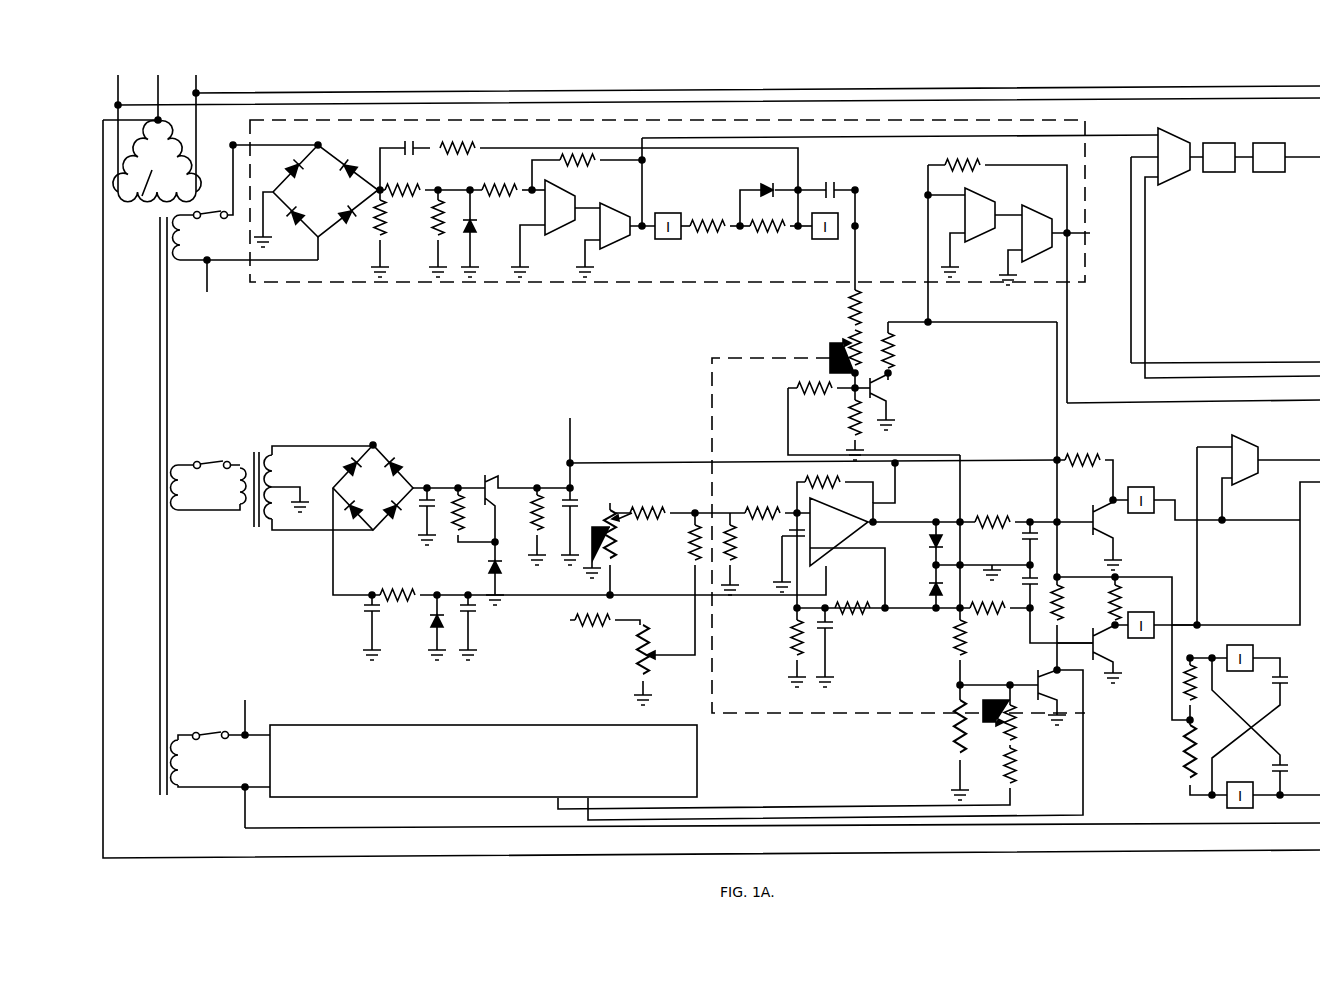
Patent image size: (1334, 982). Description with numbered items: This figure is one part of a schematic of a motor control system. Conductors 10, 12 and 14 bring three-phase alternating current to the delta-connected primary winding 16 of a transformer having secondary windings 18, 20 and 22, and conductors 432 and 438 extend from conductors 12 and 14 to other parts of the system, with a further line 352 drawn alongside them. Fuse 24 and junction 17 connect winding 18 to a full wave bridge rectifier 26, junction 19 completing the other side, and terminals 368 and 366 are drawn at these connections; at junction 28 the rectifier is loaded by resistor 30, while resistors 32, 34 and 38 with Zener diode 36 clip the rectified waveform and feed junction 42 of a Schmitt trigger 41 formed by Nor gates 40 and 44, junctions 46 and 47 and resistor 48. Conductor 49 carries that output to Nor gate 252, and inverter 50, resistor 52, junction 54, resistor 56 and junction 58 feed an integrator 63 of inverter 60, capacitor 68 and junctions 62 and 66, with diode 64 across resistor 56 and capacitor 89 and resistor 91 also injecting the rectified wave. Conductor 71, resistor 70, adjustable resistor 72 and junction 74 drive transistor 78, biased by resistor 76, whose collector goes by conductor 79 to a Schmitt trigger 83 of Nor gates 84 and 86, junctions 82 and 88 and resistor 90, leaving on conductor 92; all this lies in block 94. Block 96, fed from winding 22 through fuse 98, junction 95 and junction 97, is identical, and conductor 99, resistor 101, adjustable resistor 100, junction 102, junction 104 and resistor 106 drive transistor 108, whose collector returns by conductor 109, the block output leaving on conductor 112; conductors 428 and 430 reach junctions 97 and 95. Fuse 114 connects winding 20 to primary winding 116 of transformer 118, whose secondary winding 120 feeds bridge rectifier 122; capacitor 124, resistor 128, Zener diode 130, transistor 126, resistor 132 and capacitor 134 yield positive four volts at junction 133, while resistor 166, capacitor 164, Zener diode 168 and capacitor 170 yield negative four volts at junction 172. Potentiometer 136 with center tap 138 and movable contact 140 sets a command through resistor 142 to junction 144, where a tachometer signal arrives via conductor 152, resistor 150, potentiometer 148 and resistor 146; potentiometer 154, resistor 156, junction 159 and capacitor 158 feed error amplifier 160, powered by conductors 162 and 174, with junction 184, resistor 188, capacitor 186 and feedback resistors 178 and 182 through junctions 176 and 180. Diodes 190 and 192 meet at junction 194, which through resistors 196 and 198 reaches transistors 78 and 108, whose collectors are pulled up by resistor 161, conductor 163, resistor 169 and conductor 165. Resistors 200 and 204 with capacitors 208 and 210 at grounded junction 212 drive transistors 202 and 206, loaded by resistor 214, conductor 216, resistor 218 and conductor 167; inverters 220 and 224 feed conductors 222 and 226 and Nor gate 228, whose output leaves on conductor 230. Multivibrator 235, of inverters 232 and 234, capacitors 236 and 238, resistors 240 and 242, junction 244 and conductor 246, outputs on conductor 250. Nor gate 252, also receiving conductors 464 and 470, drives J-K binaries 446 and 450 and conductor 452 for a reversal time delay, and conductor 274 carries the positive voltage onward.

The conductor 10 is at (105, 94).
The conductor 12 is at (158, 102).
The conductor 14 is at (199, 134).
The primary winding 16 is at (157, 170).
The junction 17 is at (233, 156).
The secondary winding 18 is at (172, 235).
The junction 19 is at (207, 270).
The secondary winding 20 is at (178, 462).
The secondary winding 22 is at (184, 759).
The fuse 24 is at (215, 212).
The full wave bridge rectifier 26 is at (290, 178).
The junction 28 is at (376, 184).
The resistor 30 is at (376, 238).
The resistor 32 is at (418, 198).
The resistor 34 is at (436, 230).
The Zener diode 36 is at (474, 230).
The resistor 38 is at (509, 194).
The Nor gate 40 is at (551, 254).
The Schmitt trigger 41 is at (574, 226).
The junction 42 is at (532, 180).
The Nor gate 44 is at (614, 250).
The junction 46 is at (658, 242).
The junction 47 is at (646, 162).
The resistor 48 is at (594, 166).
The conductor 49 is at (1126, 135).
The inverter 50 is at (686, 242).
The resistor 52 is at (716, 217).
The junction 54 is at (742, 230).
The resistor 56 is at (776, 232).
The junction 58 is at (800, 230).
The inverter 60 is at (828, 240).
The junction 62 is at (856, 225).
The integrator 63 is at (850, 203).
The diode 64 is at (764, 178).
The junction 66 is at (802, 178).
The capacitor 68 is at (836, 180).
The resistor 70 is at (848, 304).
The conductor 71 is at (862, 282).
The adjustable resistor 72 is at (844, 340).
The junction 74 is at (846, 394).
The resistor 76 is at (840, 426).
The NPN transistor 78 is at (888, 384).
The conductor 79 is at (930, 353).
The junction 82 is at (916, 197).
The Schmitt trigger 83 is at (1002, 188).
The Nor gate 84 is at (975, 242).
The Nor gate 86 is at (1038, 205).
The junction 88 is at (1076, 231).
The capacitor 89 is at (410, 134).
The resistor 90 is at (942, 155).
The resistor 91 is at (471, 148).
The conductor 92 is at (1282, 407).
The block 94 is at (492, 282).
The junction 95 is at (245, 736).
The block 96 is at (420, 718).
The junction 97 is at (236, 790).
The fuse 98 is at (220, 732).
The conductor 99 is at (563, 812).
The adjustable resistor 100 is at (1018, 732).
The resistor 101 is at (1014, 784).
The junction 102 is at (1016, 686).
The junction 104 is at (954, 688).
The resistor 106 is at (948, 748).
The NPN transistor 108 is at (1040, 690).
The conductor 109 is at (1086, 718).
The conductor 112 is at (1272, 824).
The fuse 114 is at (216, 460).
The primary winding 116 is at (236, 500).
The transformer 118 is at (266, 448).
The secondary winding 120 is at (284, 480).
The full wave bridge rectifier 122 is at (380, 454).
The capacitor 124 is at (422, 528).
The NPN transistor 126 is at (488, 486).
The resistor 128 is at (455, 536).
The Zener diode 130 is at (488, 568).
The resistor 132 is at (536, 510).
The junction 133 is at (568, 476).
The capacitor 134 is at (566, 520).
The potentiometer 136 is at (614, 506).
The center tap 138 is at (608, 512).
The movable contact 140 is at (632, 512).
The resistor 142 is at (626, 532).
The junction 144 is at (695, 510).
The resistor 146 is at (690, 546).
The potentiometer 148 is at (640, 657).
The resistor 150 is at (592, 644).
The conductor 152 is at (570, 622).
The potentiometer 154 is at (736, 548).
The resistor 156 is at (768, 506).
The capacitor 158 is at (780, 536).
The junction 159 is at (788, 518).
The error amplifier 160 is at (878, 546).
The resistor 161 is at (884, 328).
The conductor 162 is at (630, 462).
The conductor 163 is at (1054, 414).
The capacitor 164 is at (356, 620).
The conductor 165 is at (1056, 480).
The resistor 166 is at (408, 593).
The conductor 167 is at (1072, 576).
The Zener diode 168 is at (428, 634).
The resistor 169 is at (1060, 612).
The capacitor 170 is at (474, 620).
The junction 172 is at (610, 595).
The conductor 174 is at (670, 598).
The junction 176 is at (881, 508).
The resistor 178 is at (802, 484).
The junction 180 is at (880, 612).
The resistor 182 is at (854, 606).
The junction 184 is at (790, 610).
The capacitor 186 is at (830, 638).
The resistor 188 is at (790, 635).
The diode 190 is at (930, 544).
The diode 192 is at (930, 585).
The junction 194 is at (990, 556).
The resistor 196 is at (792, 386).
The resistor 198 is at (952, 642).
The resistor 200 is at (992, 518).
The NPN transistor 202 is at (1104, 522).
The resistor 204 is at (988, 608).
The NPN transistor 206 is at (1090, 648).
The capacitor 208 is at (1022, 538).
The capacitor 210 is at (1022, 580).
The junction 212 is at (1034, 563).
The resistor 214 is at (1102, 456).
The conductor 216 is at (1068, 456).
The resistor 218 is at (1106, 592).
The inverter 220 is at (1198, 484).
The conductor 222 is at (1264, 526).
The inverter 224 is at (1134, 644).
The conductor 226 is at (1297, 494).
The Nor gate 228 is at (1240, 436).
The conductor 230 is at (1284, 458).
The inverter 232 is at (1256, 652).
The inverter 234 is at (1228, 808).
The free running multivibrator 235 is at (1286, 676).
The capacitor 236 is at (1296, 688).
The capacitor 238 is at (1296, 766).
The resistor 240 is at (1195, 703).
The resistor 242 is at (1184, 776).
The junction 244 is at (1188, 720).
The conductor 246 is at (1172, 684).
The conductor 250 is at (1312, 800).
The Nor gate 252 is at (1168, 134).
The conductor 274 is at (572, 420).
The phase line 352 is at (128, 101).
The terminal 366 is at (207, 292).
The terminal 368 is at (233, 145).
The conductor 428 is at (244, 816).
The conductor 430 is at (247, 704).
The conductor 432 is at (104, 238).
The conductor 438 is at (248, 93).
The J-K binary 446 is at (1230, 138).
The J-K binary 450 is at (1266, 172).
The conductor 452 is at (1302, 174).
The conductor 464 is at (1256, 378).
The conductor 470 is at (1294, 352).